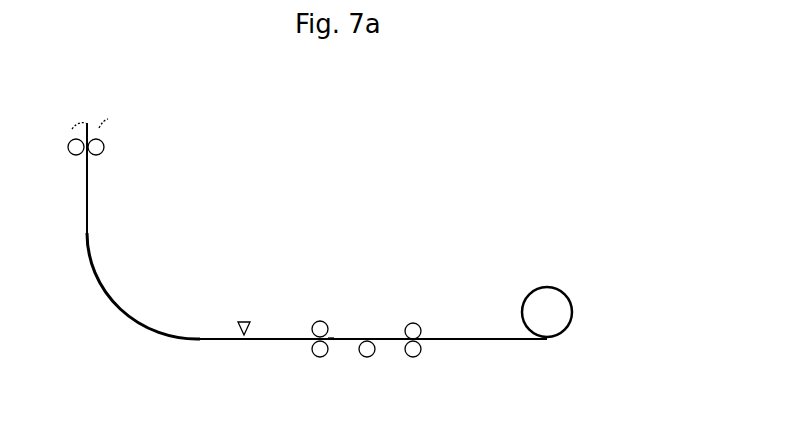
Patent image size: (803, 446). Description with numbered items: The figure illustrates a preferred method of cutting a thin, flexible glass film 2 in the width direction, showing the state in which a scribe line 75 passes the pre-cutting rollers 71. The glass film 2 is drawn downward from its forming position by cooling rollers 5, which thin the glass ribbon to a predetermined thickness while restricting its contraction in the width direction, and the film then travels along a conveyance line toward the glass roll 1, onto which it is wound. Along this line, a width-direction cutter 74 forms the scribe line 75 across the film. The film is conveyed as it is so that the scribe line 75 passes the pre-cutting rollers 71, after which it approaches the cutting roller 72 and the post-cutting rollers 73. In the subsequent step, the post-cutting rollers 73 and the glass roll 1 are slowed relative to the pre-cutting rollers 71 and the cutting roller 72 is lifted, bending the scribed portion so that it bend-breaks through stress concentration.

The glass roll 1 is at (550, 310).
The glass film 2 is at (95, 260).
The cooling rollers 5 is at (100, 142).
The pre-cutting rollers 71 is at (318, 355).
The cutting roller 72 is at (365, 356).
The post-cutting rollers 73 is at (411, 356).
The width-direction cutter 74 is at (248, 320).
The scribe line 75 is at (335, 337).